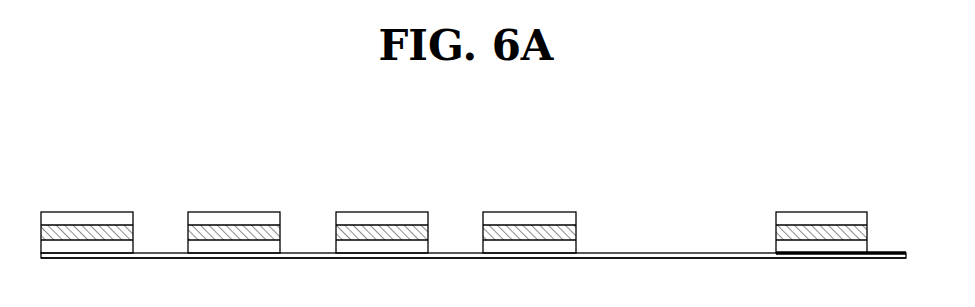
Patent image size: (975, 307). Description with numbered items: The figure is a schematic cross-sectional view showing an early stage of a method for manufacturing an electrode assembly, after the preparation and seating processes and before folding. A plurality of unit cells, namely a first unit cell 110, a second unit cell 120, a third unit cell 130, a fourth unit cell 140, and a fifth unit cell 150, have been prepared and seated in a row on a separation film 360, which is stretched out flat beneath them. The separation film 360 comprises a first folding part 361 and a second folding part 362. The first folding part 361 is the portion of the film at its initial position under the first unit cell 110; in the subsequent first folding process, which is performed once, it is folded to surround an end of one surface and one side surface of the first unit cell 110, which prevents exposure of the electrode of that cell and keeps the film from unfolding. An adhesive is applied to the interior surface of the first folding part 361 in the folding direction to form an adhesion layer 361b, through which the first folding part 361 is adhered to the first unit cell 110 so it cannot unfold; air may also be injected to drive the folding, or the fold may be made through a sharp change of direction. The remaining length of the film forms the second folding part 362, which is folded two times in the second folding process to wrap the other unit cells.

The first unit cell 110 is at (771, 222).
The second unit cell 120 is at (535, 208).
The third unit cell 130 is at (388, 208).
The fourth unit cell 140 is at (240, 208).
The fifth unit cell 150 is at (98, 208).
The separation film 360 is at (165, 262).
The first folding part 361 is at (809, 256).
The adhesion layer 361b is at (888, 258).
The second folding part 362 is at (717, 259).